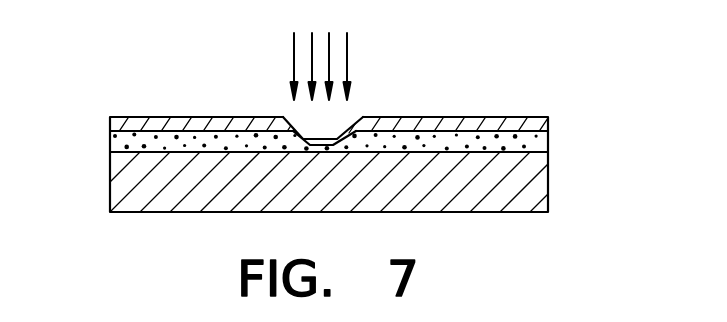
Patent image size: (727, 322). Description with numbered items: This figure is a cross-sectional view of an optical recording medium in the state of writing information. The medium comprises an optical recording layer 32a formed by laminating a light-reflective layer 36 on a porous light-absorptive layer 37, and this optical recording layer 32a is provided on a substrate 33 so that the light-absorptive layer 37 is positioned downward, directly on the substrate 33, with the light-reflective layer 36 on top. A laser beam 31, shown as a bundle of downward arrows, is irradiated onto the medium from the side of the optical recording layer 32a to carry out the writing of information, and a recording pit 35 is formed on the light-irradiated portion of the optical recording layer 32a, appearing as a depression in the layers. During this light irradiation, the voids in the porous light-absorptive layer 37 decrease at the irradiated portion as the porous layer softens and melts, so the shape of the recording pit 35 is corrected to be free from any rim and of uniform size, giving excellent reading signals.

The laser beam 31 is at (347, 53).
The optical recording layer 32a is at (102, 117).
The substrate 33 is at (535, 185).
The recording pit 35 is at (328, 134).
The light-reflective layer 36 is at (548, 123).
The porous light-absorptive layer 37 is at (548, 145).